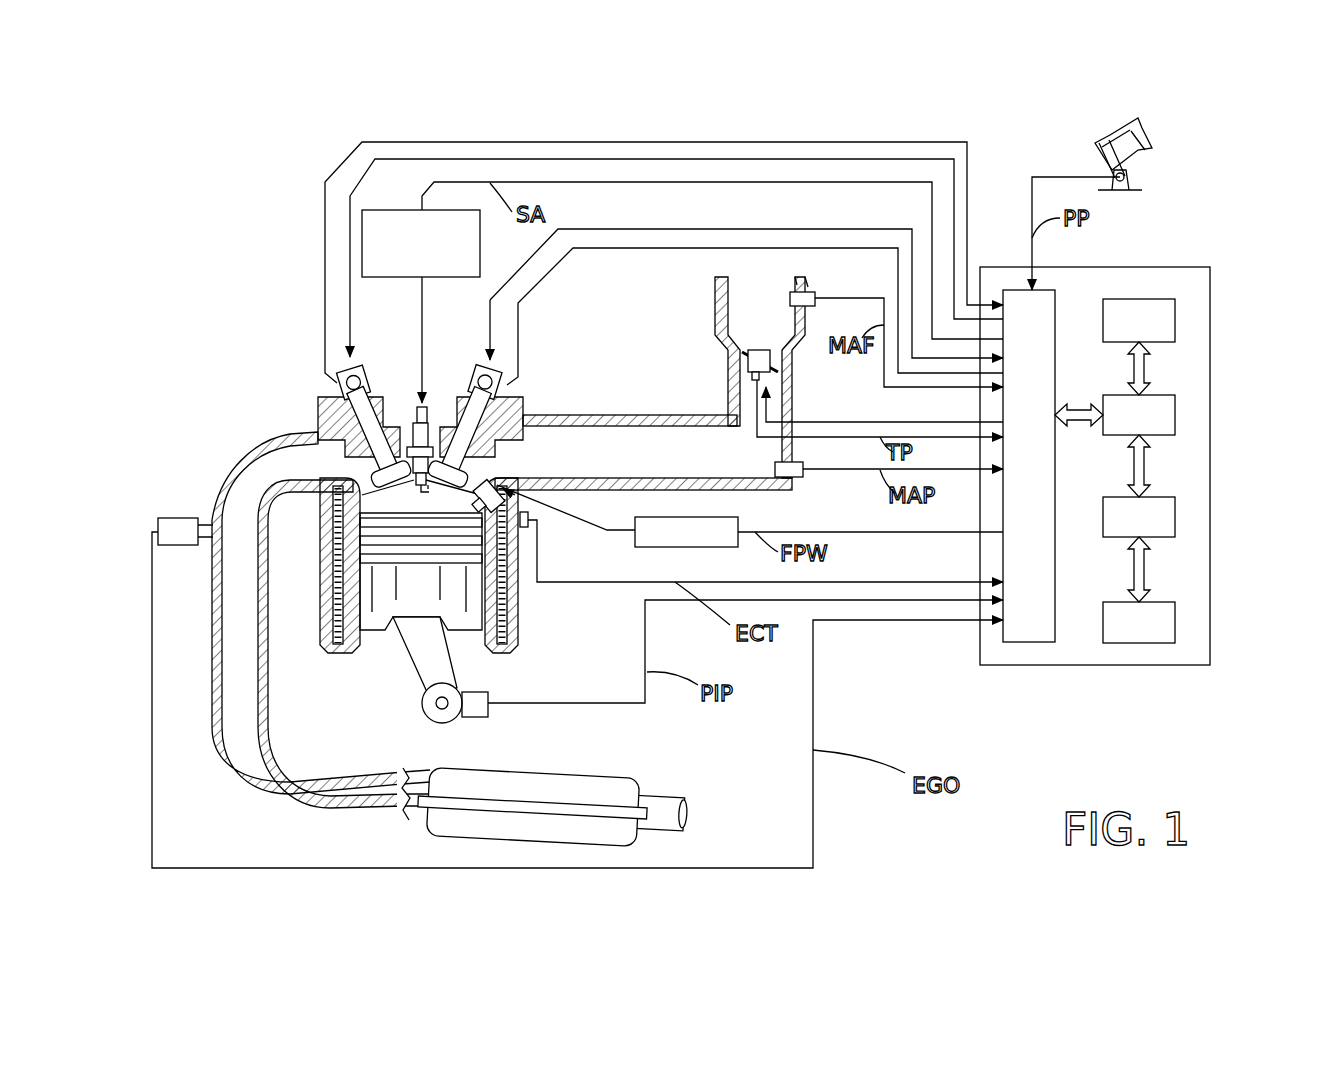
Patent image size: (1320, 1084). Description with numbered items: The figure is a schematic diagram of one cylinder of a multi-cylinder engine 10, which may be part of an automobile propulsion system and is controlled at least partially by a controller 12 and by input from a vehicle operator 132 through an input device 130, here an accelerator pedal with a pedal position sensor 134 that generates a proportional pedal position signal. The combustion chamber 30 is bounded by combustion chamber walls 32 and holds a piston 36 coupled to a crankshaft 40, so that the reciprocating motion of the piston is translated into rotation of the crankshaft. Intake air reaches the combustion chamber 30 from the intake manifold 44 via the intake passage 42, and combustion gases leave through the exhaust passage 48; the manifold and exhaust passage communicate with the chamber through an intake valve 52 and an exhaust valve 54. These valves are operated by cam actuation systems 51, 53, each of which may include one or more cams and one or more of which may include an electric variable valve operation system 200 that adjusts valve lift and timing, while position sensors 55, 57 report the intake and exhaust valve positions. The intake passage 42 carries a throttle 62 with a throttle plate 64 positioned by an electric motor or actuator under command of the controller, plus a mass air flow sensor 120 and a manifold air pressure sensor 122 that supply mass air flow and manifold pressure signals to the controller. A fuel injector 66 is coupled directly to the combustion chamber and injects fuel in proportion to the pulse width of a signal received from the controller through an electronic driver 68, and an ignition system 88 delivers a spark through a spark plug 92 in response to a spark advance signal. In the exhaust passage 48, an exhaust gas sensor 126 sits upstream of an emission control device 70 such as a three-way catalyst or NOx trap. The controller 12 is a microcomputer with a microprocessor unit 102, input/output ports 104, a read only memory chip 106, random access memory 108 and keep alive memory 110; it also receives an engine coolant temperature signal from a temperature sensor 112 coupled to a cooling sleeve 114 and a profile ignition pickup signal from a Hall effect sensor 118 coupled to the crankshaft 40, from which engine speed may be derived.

The engine 10 is at (248, 349).
The controller 12 is at (1205, 268).
The combustion chamber 30 is at (418, 497).
The combustion chamber walls 32 is at (355, 645).
The piston 36 is at (400, 600).
The crankshaft 40 is at (437, 722).
The intake passage 42 is at (760, 377).
The intake manifold 44 is at (643, 452).
The exhaust passage 48 is at (321, 626).
The cam actuation system 51 is at (490, 363).
The intake valve 52 is at (473, 462).
The cam actuation system 53 is at (362, 357).
The exhaust valve 54 is at (373, 477).
The position sensor 55 is at (500, 382).
The position sensor 57 is at (335, 385).
The throttle 62 is at (770, 357).
The throttle plate 64 is at (742, 355).
The fuel injector 66 is at (520, 495).
The electronic driver 68 is at (675, 547).
The emission control device 70 is at (603, 770).
The ignition system 88 is at (378, 210).
The spark plug 92 is at (422, 415).
The microprocessor unit 102 is at (1178, 412).
The input/output ports 104 is at (1058, 298).
The read only memory chip 106 is at (1178, 318).
The random access memory 108 is at (1178, 515).
The keep alive memory 110 is at (1178, 620).
The temperature sensor 112 is at (537, 533).
The cooling sleeve 114 is at (507, 600).
The Hall effect sensor 118 is at (477, 718).
The mass air flow sensor 120 is at (812, 292).
The manifold air pressure sensor 122 is at (795, 480).
The exhaust gas sensor 126 is at (158, 522).
The input device 130 is at (1156, 155).
The vehicle operator 132 is at (1150, 140).
The pedal position sensor 134 is at (1128, 177).
The electric variable valve operation system 200 is at (370, 372).